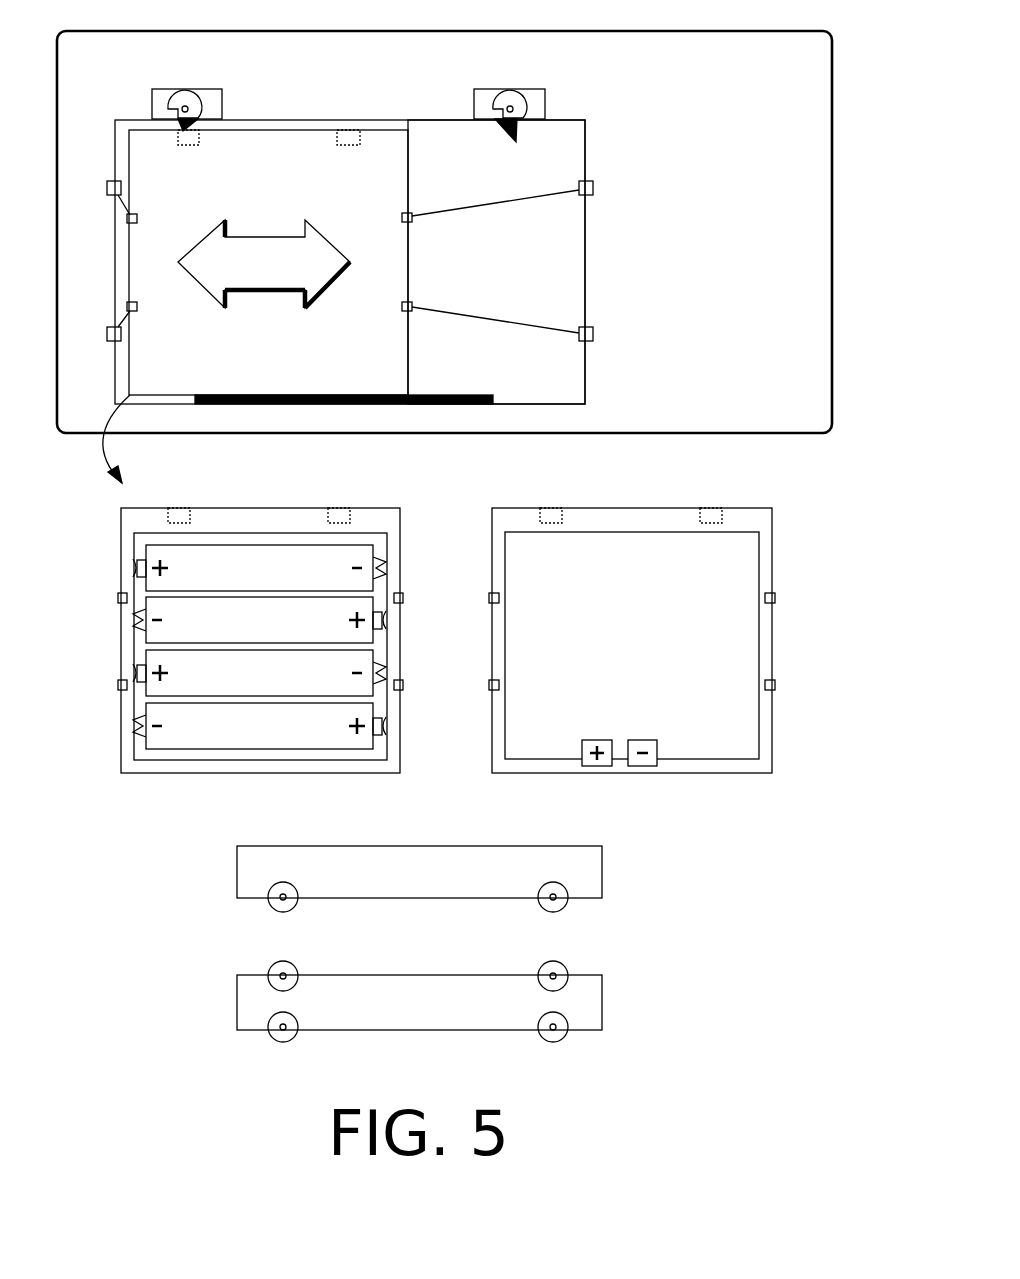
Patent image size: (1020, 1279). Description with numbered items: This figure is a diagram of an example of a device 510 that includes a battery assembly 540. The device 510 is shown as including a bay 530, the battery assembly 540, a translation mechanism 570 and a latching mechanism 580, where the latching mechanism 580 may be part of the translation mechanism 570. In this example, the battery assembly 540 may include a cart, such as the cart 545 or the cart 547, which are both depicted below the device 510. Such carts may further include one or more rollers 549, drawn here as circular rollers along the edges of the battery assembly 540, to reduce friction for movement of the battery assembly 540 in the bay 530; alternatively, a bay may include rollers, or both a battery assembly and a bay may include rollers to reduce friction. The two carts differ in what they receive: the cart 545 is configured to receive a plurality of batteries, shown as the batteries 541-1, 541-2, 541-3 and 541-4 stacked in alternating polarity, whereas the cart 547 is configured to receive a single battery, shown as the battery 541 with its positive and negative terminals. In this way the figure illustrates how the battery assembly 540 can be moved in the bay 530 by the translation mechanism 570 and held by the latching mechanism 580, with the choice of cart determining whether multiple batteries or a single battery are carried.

The device 510 is at (612, 31).
The bay 530 is at (492, 179).
The battery assembly 540 is at (288, 197).
The battery 541 is at (652, 656).
The battery 541-1 is at (288, 580).
The battery 541-2 is at (288, 632).
The battery 541-3 is at (288, 685).
The battery 541-4 is at (288, 738).
The cart 545 is at (371, 507).
The cart 547 is at (745, 507).
The rollers 549 is at (296, 901).
The translation mechanism 570 is at (657, 146).
The latching mechanism 580 is at (588, 79).